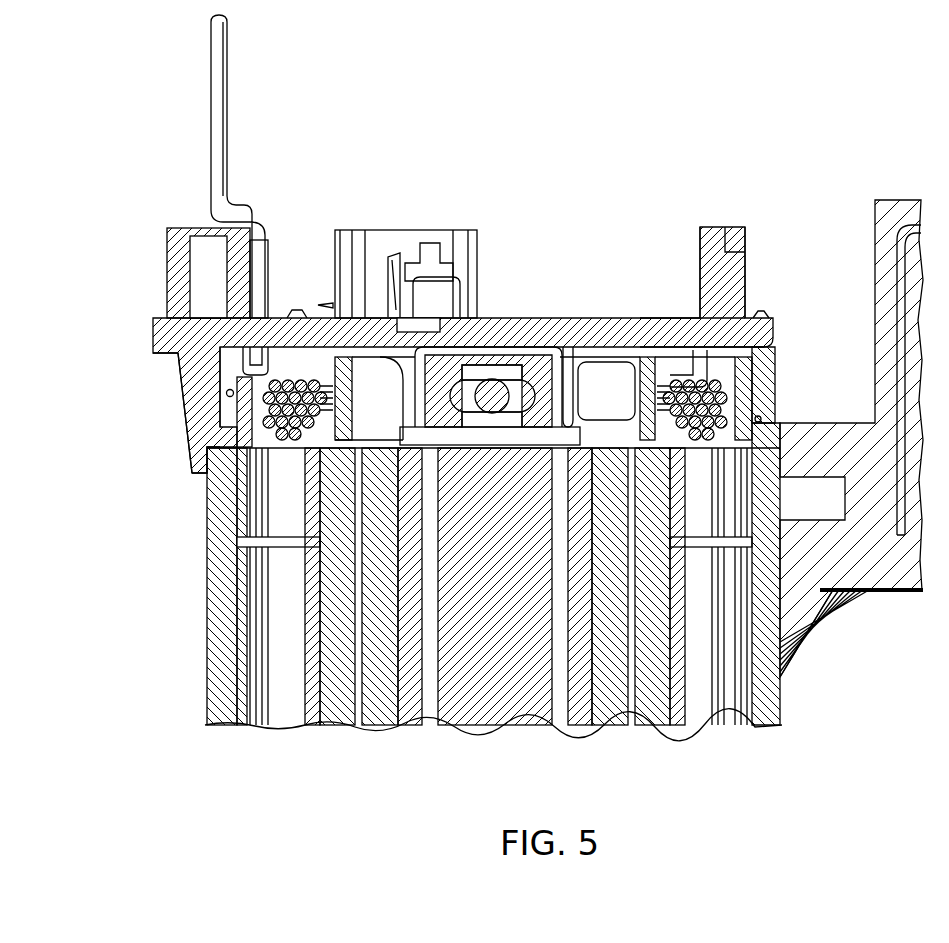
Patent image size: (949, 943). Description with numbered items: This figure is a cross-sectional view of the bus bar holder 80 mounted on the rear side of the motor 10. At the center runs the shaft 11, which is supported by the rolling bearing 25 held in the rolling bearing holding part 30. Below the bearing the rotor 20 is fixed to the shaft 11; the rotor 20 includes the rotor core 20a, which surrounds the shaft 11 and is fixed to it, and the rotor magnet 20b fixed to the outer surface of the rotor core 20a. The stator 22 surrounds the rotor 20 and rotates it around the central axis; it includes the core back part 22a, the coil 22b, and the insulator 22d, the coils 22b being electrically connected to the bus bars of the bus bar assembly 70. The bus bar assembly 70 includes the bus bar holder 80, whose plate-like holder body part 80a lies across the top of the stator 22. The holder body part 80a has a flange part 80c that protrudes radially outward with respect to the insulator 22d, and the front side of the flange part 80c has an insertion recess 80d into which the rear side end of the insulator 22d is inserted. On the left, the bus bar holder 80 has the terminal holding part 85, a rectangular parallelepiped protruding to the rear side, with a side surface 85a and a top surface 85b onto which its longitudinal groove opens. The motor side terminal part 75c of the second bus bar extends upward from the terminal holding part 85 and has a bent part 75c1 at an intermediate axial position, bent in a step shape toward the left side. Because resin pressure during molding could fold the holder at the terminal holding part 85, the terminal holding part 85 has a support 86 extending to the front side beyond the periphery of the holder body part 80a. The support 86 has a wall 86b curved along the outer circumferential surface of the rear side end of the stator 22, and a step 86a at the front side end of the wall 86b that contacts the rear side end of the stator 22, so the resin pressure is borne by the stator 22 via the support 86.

The motor 10 is at (744, 184).
The shaft 11 is at (492, 718).
The rotor 20 is at (400, 618).
The rotor core 20a is at (415, 718).
The rotor magnet 20b is at (375, 725).
The stator 22 is at (461, 547).
The core back part 22a is at (220, 605).
The coil 22b is at (245, 500).
The insulator 22d is at (757, 390).
The rolling bearing 25 is at (517, 344).
The rolling bearing holding part 30 is at (575, 348).
The bus bar assembly 70 is at (223, 166).
The motor side terminal part 75c is at (269, 166).
The bent part 75c1 is at (240, 210).
The bus bar holder 80 is at (461, 342).
The holder body part 80a is at (656, 320).
The flange part 80c is at (763, 330).
The insertion recess 80d is at (757, 368).
The terminal holding part 85 is at (223, 237).
The side surface 85a is at (272, 240).
The top surface 85b is at (176, 228).
The support 86 is at (143, 407).
The step 86a is at (205, 460).
The wall 86b is at (200, 405).